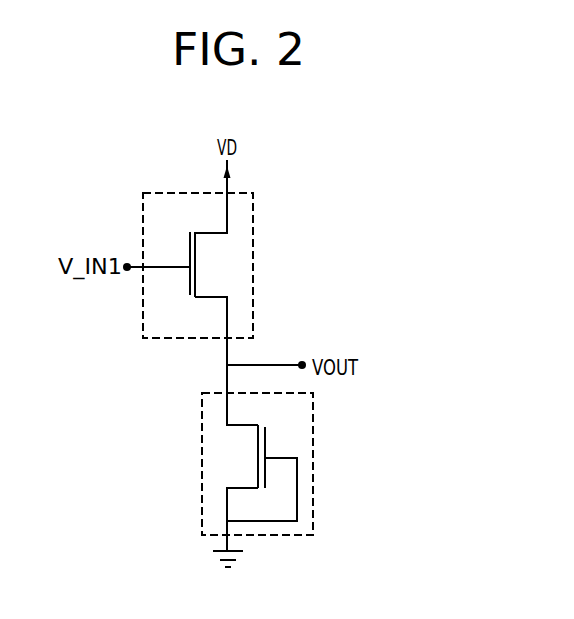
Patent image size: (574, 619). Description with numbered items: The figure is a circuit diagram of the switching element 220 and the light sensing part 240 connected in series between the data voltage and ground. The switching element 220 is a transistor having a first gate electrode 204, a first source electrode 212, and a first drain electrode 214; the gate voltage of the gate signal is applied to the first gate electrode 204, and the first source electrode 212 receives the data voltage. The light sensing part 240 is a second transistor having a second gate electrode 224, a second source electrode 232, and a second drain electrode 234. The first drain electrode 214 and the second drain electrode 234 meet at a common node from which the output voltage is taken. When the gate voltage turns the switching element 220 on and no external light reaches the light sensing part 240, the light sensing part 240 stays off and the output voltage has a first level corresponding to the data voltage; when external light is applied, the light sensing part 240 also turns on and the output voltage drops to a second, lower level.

The first gate electrode 204 is at (158, 263).
The first source electrode 212 is at (207, 206).
The first drain electrode 214 is at (207, 331).
The switching element 220 is at (253, 256).
The second gate electrode 224 is at (266, 474).
The second source electrode 232 is at (247, 504).
The second drain electrode 234 is at (247, 395).
The light sensing part 240 is at (313, 465).